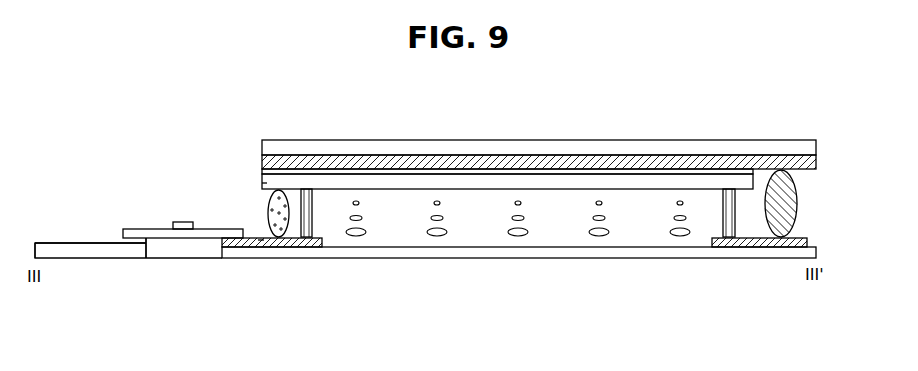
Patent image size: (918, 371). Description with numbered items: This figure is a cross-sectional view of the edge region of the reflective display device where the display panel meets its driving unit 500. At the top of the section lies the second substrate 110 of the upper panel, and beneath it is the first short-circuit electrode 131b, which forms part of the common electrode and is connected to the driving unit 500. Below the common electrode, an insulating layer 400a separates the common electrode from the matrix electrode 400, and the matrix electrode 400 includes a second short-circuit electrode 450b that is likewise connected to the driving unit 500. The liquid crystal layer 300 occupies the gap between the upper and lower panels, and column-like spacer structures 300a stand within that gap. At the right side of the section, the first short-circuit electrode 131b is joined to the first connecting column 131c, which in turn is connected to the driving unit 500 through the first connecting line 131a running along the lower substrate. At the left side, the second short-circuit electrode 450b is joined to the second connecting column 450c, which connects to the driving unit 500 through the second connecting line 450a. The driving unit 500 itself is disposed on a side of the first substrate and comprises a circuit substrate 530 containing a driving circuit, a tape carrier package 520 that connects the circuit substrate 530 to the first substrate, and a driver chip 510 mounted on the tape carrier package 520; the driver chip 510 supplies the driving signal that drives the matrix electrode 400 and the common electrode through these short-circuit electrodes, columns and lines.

The second substrate 110 is at (808, 148).
The first connecting line 131a is at (797, 237).
The first short-circuit electrode 131b is at (808, 161).
The first connecting column 131c is at (780, 203).
The liquid crystal layer 300 is at (567, 215).
The support column 300a is at (725, 213).
The matrix electrode 400 is at (447, 183).
The insulating layer 400a is at (500, 173).
The second connecting line 450a is at (263, 240).
The second short-circuit electrode 450b is at (267, 183).
The second connecting column 450c is at (282, 212).
The driving unit 500 is at (139, 282).
The driver chip 510 is at (182, 230).
The tape carrier package 520 is at (210, 235).
The circuit substrate 530 is at (123, 250).